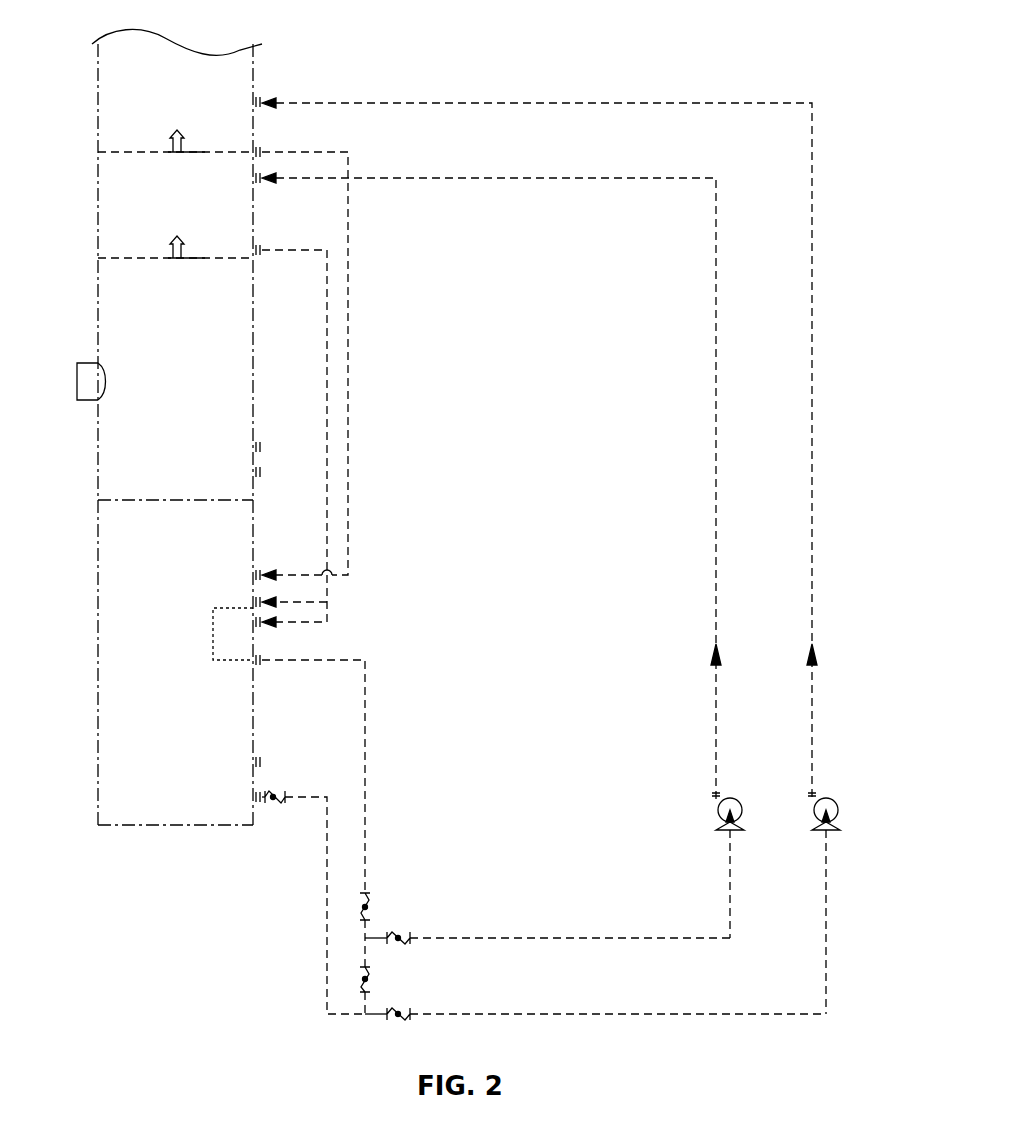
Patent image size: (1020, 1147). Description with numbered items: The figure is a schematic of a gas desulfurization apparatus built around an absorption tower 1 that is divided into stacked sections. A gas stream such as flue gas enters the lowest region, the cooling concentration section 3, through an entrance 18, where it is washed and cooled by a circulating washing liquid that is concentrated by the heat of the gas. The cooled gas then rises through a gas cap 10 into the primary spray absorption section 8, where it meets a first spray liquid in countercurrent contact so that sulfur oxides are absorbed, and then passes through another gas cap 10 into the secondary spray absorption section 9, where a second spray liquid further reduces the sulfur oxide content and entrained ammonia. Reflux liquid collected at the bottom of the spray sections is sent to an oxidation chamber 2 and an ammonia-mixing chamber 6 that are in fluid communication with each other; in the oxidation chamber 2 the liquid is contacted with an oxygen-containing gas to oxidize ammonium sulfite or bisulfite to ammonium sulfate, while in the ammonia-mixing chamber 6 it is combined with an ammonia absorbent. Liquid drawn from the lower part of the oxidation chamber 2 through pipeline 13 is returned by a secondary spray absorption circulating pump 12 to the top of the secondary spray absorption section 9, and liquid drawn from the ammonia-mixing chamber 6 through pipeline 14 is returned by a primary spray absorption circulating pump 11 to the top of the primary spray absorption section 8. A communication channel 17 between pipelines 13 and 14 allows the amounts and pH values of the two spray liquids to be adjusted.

The absorption tower 1 is at (175, 827).
The oxidation chamber 2 is at (105, 740).
The cooling concentration section 3 is at (105, 460).
The ammonia-mixing chamber 6 is at (217, 632).
The primary spray absorption section 8 is at (105, 212).
The secondary spray absorption section 9 is at (105, 98).
The gas cap 10 is at (205, 152).
The primary spray absorption circulating pump 11 is at (720, 826).
The secondary spray absorption circulating pump 12 is at (814, 826).
The pipeline 13 is at (318, 800).
The pipeline 14 is at (366, 735).
The communication channel 17 is at (366, 985).
The entrance 18 is at (88, 384).